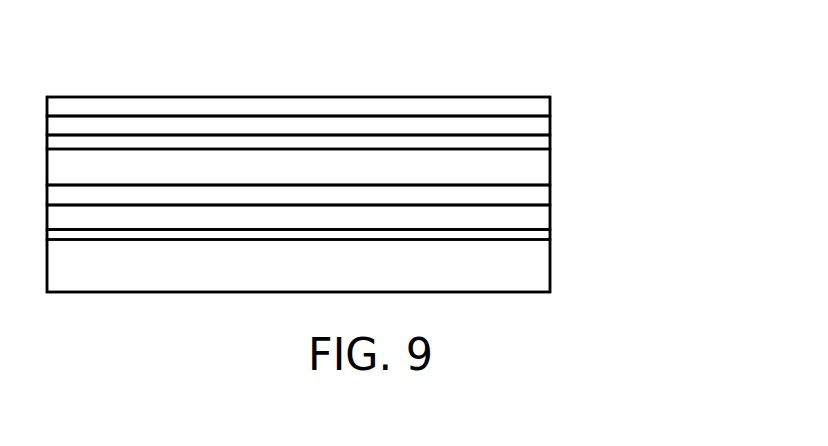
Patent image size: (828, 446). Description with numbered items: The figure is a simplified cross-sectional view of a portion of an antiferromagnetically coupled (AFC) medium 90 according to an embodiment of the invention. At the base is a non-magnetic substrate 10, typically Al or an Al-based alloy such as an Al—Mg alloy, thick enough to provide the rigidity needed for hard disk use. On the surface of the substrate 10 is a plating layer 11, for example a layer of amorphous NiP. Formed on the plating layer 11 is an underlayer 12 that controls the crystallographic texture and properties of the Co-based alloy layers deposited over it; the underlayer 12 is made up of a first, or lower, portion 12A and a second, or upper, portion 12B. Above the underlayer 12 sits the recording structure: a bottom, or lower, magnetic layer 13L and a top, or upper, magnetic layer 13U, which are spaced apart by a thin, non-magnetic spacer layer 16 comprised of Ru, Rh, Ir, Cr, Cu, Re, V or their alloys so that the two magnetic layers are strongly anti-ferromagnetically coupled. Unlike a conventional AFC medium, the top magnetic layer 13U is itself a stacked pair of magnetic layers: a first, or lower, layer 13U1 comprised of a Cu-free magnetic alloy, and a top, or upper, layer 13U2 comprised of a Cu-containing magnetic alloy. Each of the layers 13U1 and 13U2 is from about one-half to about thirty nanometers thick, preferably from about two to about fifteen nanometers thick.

The antiferromagnetically coupled (AFC) medium 90 is at (408, 90).
The top (or upper) magnetic layer 13U is at (670, 88).
The top (or upper) layer (CuML) 13U2 is at (562, 105).
The first (or lower) layer (ML) 13U1 is at (562, 125).
The non-magnetic spacer layer 16 is at (562, 148).
The bottom (or lower) magnetic layer 13L is at (562, 172).
The underlayer 12 is at (710, 187).
The second (or upper) portion of underlayer 12B is at (562, 197).
The first (or lower) portion of underlayer 12A is at (562, 221).
The plating layer 11 is at (562, 238).
The non-magnetic substrate 10 is at (562, 273).